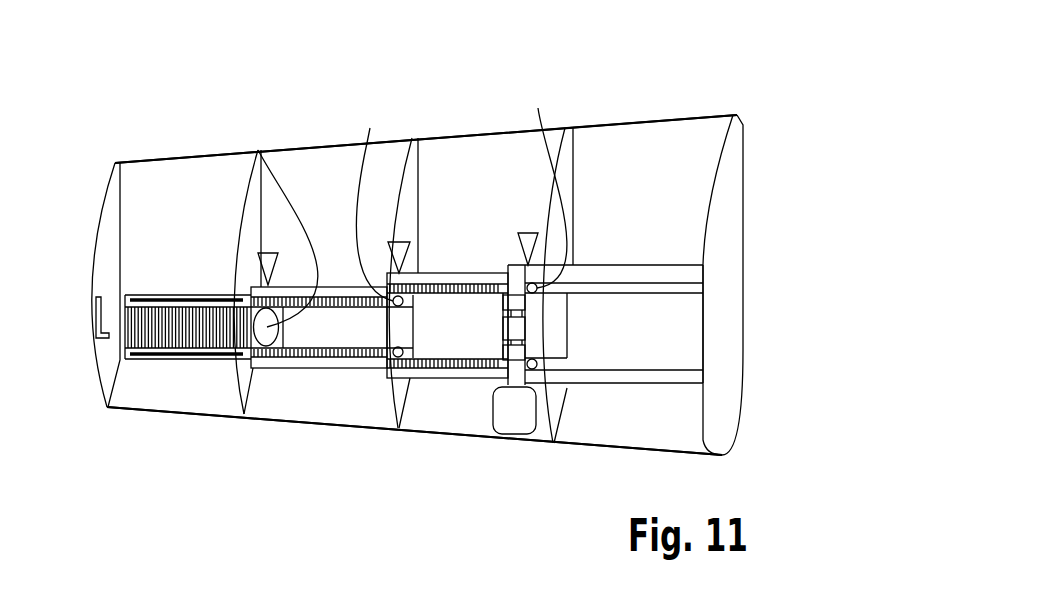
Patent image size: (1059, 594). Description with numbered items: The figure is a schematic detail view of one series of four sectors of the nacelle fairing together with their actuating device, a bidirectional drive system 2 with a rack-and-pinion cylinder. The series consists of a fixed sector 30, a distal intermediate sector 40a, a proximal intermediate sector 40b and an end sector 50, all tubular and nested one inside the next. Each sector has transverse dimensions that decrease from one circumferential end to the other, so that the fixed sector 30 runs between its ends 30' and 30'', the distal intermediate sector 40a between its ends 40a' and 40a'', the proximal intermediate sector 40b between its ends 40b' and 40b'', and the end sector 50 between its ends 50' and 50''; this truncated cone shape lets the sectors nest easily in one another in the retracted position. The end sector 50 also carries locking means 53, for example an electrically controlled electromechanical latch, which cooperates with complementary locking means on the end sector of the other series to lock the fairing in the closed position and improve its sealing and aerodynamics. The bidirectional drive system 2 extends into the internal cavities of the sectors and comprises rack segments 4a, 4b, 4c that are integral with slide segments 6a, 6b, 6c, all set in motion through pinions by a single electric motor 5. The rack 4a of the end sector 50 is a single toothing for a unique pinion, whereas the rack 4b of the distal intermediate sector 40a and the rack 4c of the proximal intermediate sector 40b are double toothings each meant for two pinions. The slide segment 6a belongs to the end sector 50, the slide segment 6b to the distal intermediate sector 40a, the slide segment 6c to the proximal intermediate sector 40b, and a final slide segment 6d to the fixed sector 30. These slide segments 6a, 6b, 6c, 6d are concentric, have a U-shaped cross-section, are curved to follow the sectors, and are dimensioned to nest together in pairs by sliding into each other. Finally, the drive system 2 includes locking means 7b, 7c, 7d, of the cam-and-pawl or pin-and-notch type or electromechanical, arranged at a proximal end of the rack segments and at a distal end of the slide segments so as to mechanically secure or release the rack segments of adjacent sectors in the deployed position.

The bidirectional drive system 2 is at (806, 40).
The fixed sector 30 is at (645, 256).
The proximal circumferential end of the fixed sector 30' is at (744, 234).
The distal circumferential end of the fixed sector 30'' is at (597, 234).
The distal intermediate sector 40a is at (485, 251).
The proximal circumferential end of the distal intermediate sector 40a' is at (572, 227).
The distal circumferential end of the distal intermediate sector 40a'' is at (440, 233).
The proximal intermediate sector 40b is at (331, 258).
The proximal circumferential end of the proximal intermediate sector 40b' is at (396, 233).
The distal circumferential end of the proximal intermediate sector 40b'' is at (271, 232).
The end sector 50 is at (184, 252).
The proximal circumferential end of the end sector 50' is at (237, 232).
The distal circumferential end of the end sector 50'' is at (92, 238).
The locking means 53 is at (97, 313).
The rack segment 4a is at (175, 340).
The rack segment 4b is at (307, 353).
The rack segment 4c is at (450, 365).
The electric motor 5 is at (513, 415).
The slide segment 6a is at (148, 360).
The slide segment 6b is at (287, 363).
The slide segment 6c is at (435, 375).
The slide segment 6d is at (618, 382).
The locking means 7b is at (268, 253).
The locking means 7c is at (391, 242).
The locking means 7d is at (528, 233).